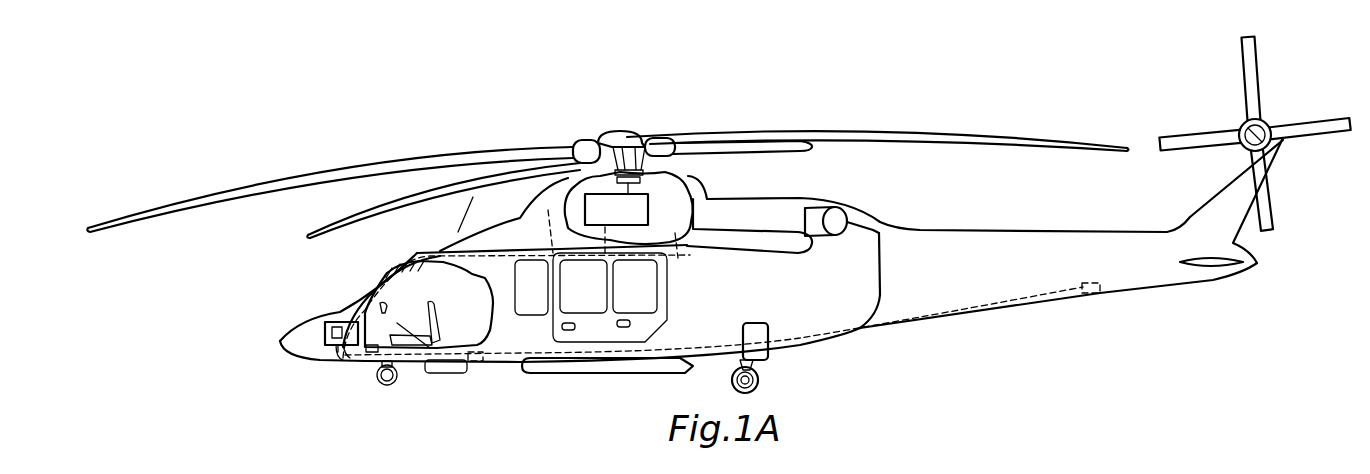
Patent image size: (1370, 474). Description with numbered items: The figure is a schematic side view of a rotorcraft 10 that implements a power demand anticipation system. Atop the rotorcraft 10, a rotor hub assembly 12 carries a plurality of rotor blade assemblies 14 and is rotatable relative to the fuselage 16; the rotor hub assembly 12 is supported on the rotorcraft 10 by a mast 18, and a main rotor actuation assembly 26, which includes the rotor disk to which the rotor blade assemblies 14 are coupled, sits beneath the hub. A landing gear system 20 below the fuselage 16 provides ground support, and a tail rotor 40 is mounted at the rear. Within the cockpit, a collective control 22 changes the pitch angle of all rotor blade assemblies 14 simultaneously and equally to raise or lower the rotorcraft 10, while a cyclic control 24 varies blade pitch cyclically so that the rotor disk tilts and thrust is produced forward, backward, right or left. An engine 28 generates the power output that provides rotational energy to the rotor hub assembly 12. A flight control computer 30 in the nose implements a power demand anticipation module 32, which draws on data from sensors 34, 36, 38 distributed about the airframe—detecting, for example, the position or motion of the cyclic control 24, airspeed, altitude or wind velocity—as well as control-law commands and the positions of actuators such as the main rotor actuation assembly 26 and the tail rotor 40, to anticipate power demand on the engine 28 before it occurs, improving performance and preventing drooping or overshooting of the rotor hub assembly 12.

The rotorcraft 10 is at (462, 141).
The rotor hub assembly 12 is at (612, 129).
The rotor blade assemblies 14 is at (903, 134).
The fuselage 16 is at (513, 363).
The mast 18 is at (652, 188).
The landing gear system 20 is at (760, 384).
The collective control 22 is at (673, 245).
The cyclic control 24 is at (373, 305).
The main rotor actuation assembly 26 is at (640, 178).
The engine 28 is at (616, 209).
The flight control computer 30 is at (341, 349).
The power demand anticipation module 32 is at (327, 330).
The sensor 34 is at (370, 356).
The sensor 36 is at (478, 362).
The sensor 38 is at (1091, 293).
The tail rotor 40 is at (1230, 116).